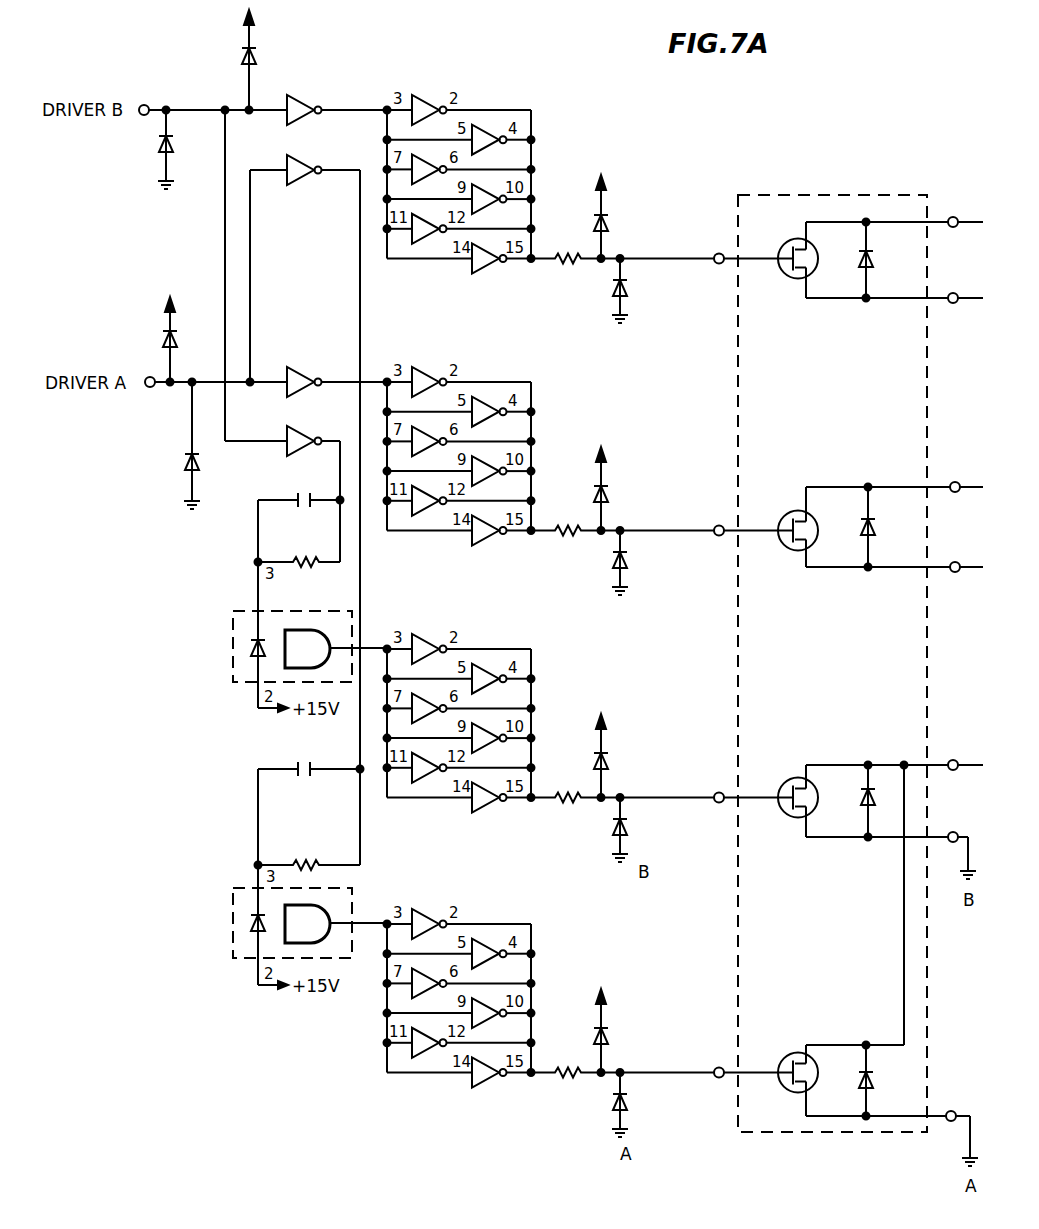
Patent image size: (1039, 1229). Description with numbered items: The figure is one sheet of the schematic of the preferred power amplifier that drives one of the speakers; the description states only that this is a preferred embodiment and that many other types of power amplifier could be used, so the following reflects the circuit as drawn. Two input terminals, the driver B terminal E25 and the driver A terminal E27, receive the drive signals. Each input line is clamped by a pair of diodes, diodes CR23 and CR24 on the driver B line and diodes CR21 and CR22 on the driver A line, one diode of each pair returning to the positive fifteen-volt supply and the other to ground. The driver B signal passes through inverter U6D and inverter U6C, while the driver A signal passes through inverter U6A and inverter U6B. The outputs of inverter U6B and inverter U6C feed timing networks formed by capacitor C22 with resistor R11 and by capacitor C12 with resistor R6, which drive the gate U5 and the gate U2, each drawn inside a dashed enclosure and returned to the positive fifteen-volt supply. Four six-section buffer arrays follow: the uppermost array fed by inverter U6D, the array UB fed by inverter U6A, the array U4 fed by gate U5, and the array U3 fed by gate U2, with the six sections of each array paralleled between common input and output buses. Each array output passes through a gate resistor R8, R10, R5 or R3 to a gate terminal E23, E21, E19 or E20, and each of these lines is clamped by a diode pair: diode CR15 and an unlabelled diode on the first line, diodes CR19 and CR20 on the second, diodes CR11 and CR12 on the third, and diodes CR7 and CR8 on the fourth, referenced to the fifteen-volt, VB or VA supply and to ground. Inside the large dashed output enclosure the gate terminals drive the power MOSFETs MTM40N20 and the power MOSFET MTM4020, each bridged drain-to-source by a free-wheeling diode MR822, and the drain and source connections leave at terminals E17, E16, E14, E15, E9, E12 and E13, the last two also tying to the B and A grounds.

The driver B input terminal E25 is at (213, 99).
The driver A input terminal E27 is at (207, 392).
The clamp diode IN914 CR23 is at (277, 60).
The clamp diode IN914 CR24 is at (160, 150).
The clamp diode IN914 CR21 is at (150, 329).
The clamp diode IN914 CR22 is at (220, 445).
The inverting buffer U6D is at (301, 95).
The inverting buffer U6C is at (299, 156).
The inverting buffer U6A is at (328, 368).
The inverting buffer U6B is at (305, 430).
The timing capacitor C22 is at (299, 489).
The timing resistor R11 is at (298, 551).
The one-shot / Schmitt gate U5 is at (233, 645).
The timing capacitor C12 is at (311, 758).
The timing resistor R6 is at (308, 853).
The one-shot / Schmitt gate U2 is at (233, 921).
The hex inverting buffer array UB is at (459, 444).
The hex inverting buffer array U4 is at (459, 710).
The hex inverting buffer array U3 is at (459, 984).
The gate resistor R8 is at (556, 247).
The gate resistor R10 is at (557, 519).
The gate resistor R5 is at (556, 786).
The gate resistor R3 is at (556, 1061).
The clamp diode IN914 CR15 is at (622, 205).
The clamp diode IN914 CR19 is at (622, 476).
The clamp diode IN914 CR20 is at (647, 563).
The clamp diode IN914 CR11 is at (623, 744).
The clamp diode IN914 CR12 is at (647, 830).
The clamp diode IN914 CR7 is at (623, 1019).
The clamp diode IN914 CR8 is at (647, 1105).
The gate drive terminal E23 is at (746, 247).
The gate drive terminal E21 is at (746, 519).
The gate drive terminal E19 is at (746, 786).
The gate drive terminal E20 is at (746, 1061).
The drain terminal E17 is at (959, 208).
The source terminal E16 is at (959, 285).
The drain terminal E14 is at (961, 473).
The source terminal E15 is at (961, 553).
The drain terminal E9 is at (962, 752).
The source terminal E12 is at (956, 843).
The source terminal E13 is at (957, 1127).
The power MOSFET MTM40N20 is at (786, 279).
The power MOSFET MTM4020 is at (789, 1054).
The free-wheeling diode MR822 is at (866, 788).